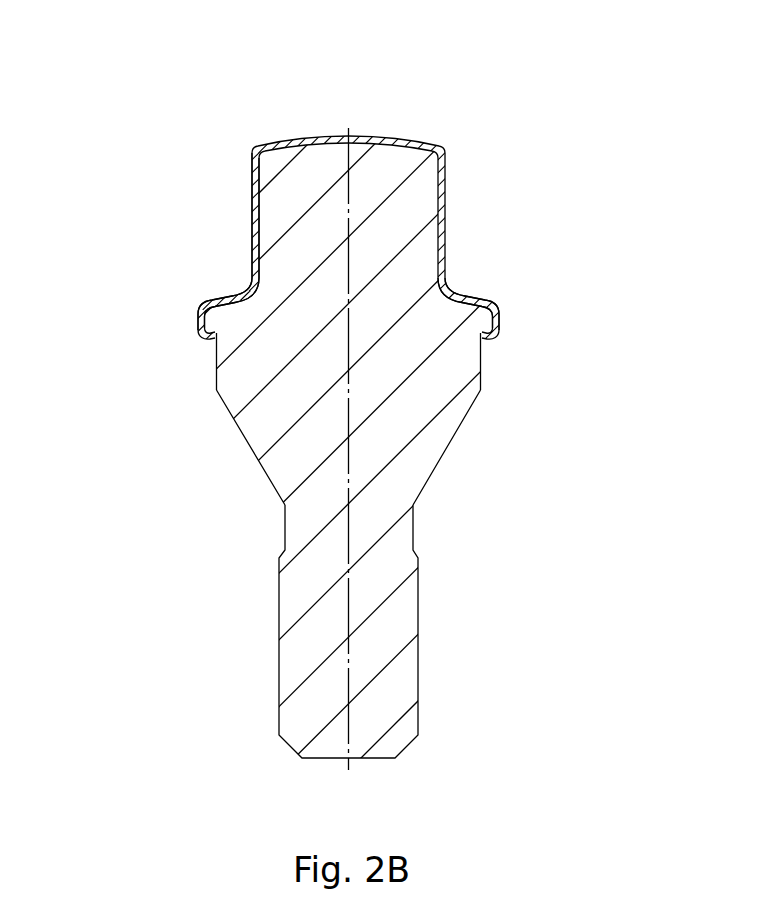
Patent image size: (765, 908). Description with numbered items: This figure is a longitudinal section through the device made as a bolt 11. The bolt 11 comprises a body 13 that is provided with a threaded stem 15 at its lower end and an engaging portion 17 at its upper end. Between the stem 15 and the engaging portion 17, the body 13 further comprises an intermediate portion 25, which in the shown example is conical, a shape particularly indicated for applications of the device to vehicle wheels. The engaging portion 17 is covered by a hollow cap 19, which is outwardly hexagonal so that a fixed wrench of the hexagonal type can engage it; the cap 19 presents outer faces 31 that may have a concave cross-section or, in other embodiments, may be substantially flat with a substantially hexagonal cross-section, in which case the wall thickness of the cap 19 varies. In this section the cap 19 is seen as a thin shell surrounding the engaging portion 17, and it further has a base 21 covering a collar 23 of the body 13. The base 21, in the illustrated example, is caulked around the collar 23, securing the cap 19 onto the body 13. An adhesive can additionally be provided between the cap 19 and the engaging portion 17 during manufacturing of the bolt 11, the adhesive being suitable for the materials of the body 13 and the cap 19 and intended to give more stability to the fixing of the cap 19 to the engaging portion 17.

The bolt 11 is at (382, 402).
The body 13 is at (382, 402).
The threaded stem 15 is at (405, 607).
The engaging portion 17 is at (325, 170).
The hollow cap 19 is at (350, 238).
The base 21 is at (502, 318).
The collar 23 is at (197, 313).
The intermediate portion 25 is at (435, 372).
The outer faces 31 is at (253, 190).